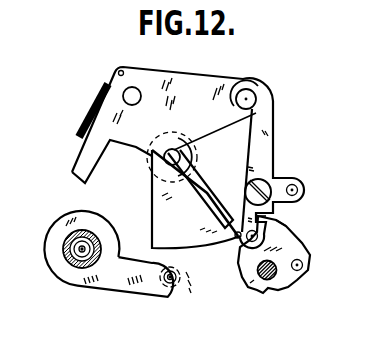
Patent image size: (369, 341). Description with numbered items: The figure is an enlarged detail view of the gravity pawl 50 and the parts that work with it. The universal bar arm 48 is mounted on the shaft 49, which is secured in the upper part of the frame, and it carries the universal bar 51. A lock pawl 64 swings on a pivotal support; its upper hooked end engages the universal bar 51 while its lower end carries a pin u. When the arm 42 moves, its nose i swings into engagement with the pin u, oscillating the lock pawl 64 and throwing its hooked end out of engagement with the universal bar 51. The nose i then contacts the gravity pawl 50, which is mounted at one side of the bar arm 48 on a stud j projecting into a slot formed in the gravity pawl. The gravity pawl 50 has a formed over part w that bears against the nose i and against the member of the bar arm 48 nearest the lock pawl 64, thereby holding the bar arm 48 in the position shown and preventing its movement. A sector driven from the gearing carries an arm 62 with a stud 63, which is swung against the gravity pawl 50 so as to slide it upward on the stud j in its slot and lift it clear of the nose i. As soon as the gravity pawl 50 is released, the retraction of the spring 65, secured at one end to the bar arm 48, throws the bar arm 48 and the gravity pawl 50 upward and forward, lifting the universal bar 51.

The arm 42 is at (276, 294).
The universal bar arm 48 is at (219, 90).
The shaft 49 is at (133, 96).
The gravity pawl 50 is at (153, 190).
The universal bar 51 is at (257, 98).
The arm 62 is at (128, 288).
The stud 63 is at (172, 281).
The lock pawl 64 is at (268, 158).
The spring 65 is at (98, 99).
The lever arm d is at (163, 205).
The nose i is at (280, 225).
The stud j is at (170, 158).
The pin u is at (262, 243).
The formed over part w is at (238, 236).